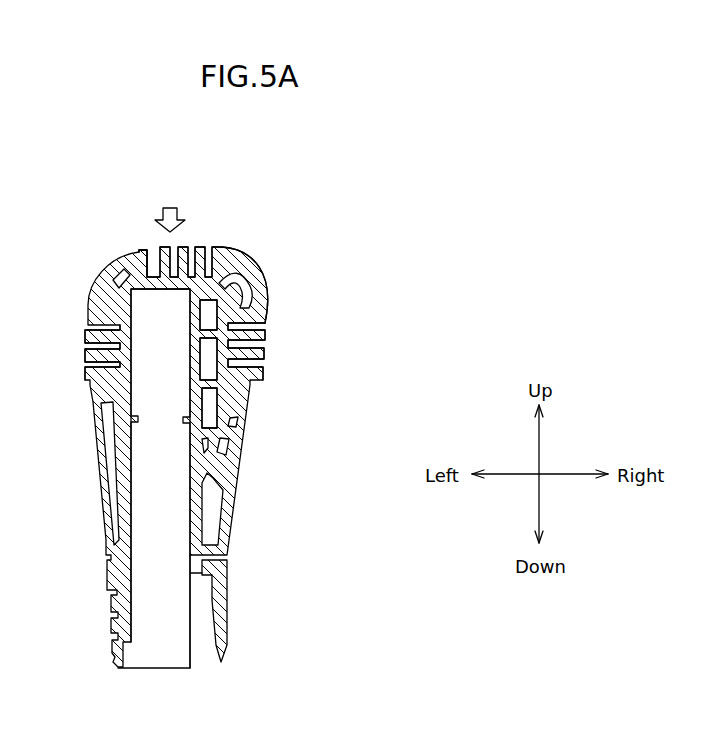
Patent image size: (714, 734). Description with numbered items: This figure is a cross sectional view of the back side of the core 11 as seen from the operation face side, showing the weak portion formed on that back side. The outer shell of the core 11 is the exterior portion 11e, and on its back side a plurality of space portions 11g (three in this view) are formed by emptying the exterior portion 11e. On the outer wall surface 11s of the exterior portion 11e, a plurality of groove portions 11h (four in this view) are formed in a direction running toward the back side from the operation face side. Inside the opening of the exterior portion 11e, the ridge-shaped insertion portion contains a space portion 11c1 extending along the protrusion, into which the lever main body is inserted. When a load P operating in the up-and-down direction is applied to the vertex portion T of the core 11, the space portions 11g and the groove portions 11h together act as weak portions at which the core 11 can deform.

The core 11 is at (284, 218).
The outer wall surface 11s is at (222, 247).
The exterior portion 11e is at (253, 281).
The space portions 11g is at (213, 313).
The groove portions 11h is at (83, 300).
The space portion 11c1 is at (160, 495).
The vertex portion T is at (146, 250).
The load P is at (170, 205).